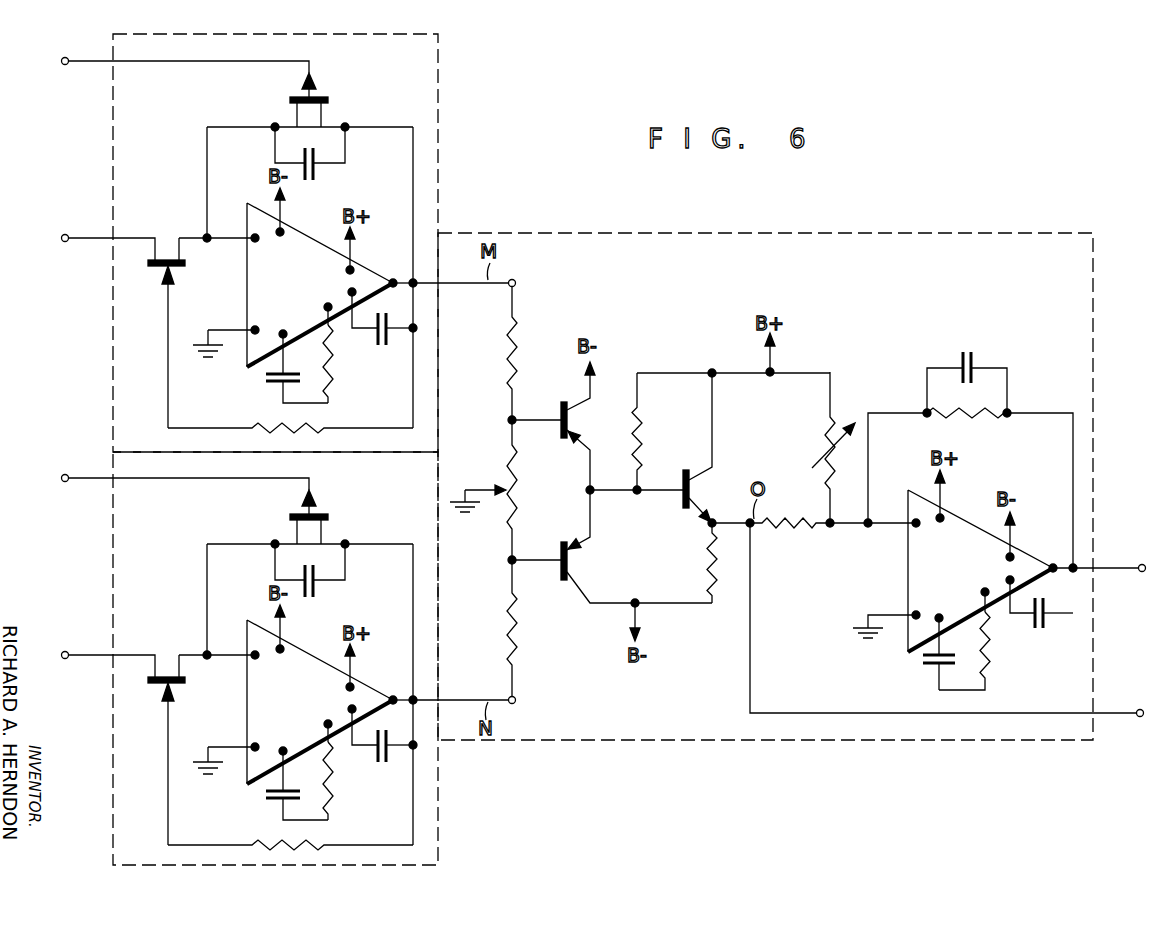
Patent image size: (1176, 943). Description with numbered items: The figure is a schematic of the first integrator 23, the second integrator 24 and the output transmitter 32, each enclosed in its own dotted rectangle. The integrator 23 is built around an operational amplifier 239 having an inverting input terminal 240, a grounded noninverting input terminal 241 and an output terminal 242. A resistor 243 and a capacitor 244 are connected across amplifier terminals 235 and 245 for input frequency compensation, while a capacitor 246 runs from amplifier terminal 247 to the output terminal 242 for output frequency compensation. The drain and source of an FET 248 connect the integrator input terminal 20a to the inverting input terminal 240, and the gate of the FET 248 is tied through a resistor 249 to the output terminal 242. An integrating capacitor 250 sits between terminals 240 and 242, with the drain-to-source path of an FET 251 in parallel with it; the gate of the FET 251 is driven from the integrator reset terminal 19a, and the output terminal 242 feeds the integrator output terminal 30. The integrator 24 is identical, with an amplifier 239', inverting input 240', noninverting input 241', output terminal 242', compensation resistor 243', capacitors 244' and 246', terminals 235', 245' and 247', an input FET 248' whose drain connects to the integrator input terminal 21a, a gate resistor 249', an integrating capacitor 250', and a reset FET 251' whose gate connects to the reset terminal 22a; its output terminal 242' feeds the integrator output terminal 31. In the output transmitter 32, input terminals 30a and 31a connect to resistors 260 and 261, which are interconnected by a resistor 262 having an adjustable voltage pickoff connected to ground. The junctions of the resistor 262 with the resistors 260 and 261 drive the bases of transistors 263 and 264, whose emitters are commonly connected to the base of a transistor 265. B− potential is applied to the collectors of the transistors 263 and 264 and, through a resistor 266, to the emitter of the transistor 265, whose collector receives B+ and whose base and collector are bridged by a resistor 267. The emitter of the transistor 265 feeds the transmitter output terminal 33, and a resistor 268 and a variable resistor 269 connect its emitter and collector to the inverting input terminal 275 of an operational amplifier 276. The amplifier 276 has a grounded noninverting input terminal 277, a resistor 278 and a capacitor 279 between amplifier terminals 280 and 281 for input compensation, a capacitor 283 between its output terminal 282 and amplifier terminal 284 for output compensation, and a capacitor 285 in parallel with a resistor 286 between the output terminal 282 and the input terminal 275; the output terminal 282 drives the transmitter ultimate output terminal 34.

The integrator reset terminal 19a is at (63, 59).
The integrator input terminal 20a is at (62, 236).
The integrator input terminal 21a is at (64, 652).
The integrator reset terminal 22a is at (63, 476).
The integrator 23 is at (440, 72).
The integrator 24 is at (440, 822).
The integrator output terminal 30 is at (418, 280).
The input terminal 30a is at (516, 282).
The integrator output terminal 31 is at (417, 702).
The input terminal 31a is at (516, 700).
The output transmitter 32 is at (860, 232).
The transmitter output terminal 33 is at (1143, 708).
The transmitter ultimate output terminal 34 is at (1145, 563).
The amplifier terminal 235 is at (320, 325).
The operational amplifier 239 is at (303, 264).
The inverting input terminal 240 is at (219, 257).
The noninverting input terminal 241 is at (226, 327).
The output terminal 242 is at (390, 261).
The resistor 243 is at (358, 365).
The capacitor 244 is at (270, 366).
The amplifier terminal 245 is at (303, 309).
The capacitor 246 is at (382, 349).
The amplifier terminal 247 is at (338, 297).
The FET 248 is at (128, 324).
The resistor 249 is at (290, 414).
The capacitor 250 is at (310, 172).
The FET 251 is at (332, 94).
The amplifier terminal 235' is at (320, 742).
The operational amplifier 239' is at (303, 681).
The inverting input terminal 240' is at (219, 674).
The noninverting input terminal 241' is at (226, 744).
The output terminal 242' is at (390, 678).
The resistor 243' is at (361, 782).
The capacitor 244' is at (270, 783).
The amplifier terminal 245' is at (303, 726).
The capacitor 246' is at (382, 766).
The amplifier terminal 247' is at (338, 714).
The FET 248' is at (128, 741).
The resistor 249' is at (290, 831).
The capacitor 250' is at (310, 589).
The FET 251' is at (335, 511).
The resistor 260 is at (518, 352).
The resistor 261 is at (520, 633).
The resistor 262 is at (522, 490).
The transistor 263 is at (558, 408).
The transistor 264 is at (560, 581).
The transistor 265 is at (680, 503).
The resistor 266 is at (708, 560).
The resistor 267 is at (643, 437).
The resistor 268 is at (788, 530).
The variable resistor 269 is at (822, 445).
The inverting input terminal 275 is at (910, 527).
The operational amplifier 276 is at (919, 505).
The noninverting input terminal 277 is at (912, 614).
The resistor 278 is at (993, 658).
The capacitor 279 is at (922, 663).
The amplifier terminal 280 is at (984, 590).
The amplifier terminal 281 is at (942, 619).
The output terminal 282 is at (1052, 563).
The capacitor 283 is at (1040, 632).
The amplifier terminal 284 is at (1008, 578).
The capacitor 285 is at (968, 350).
The resistor 286 is at (965, 418).